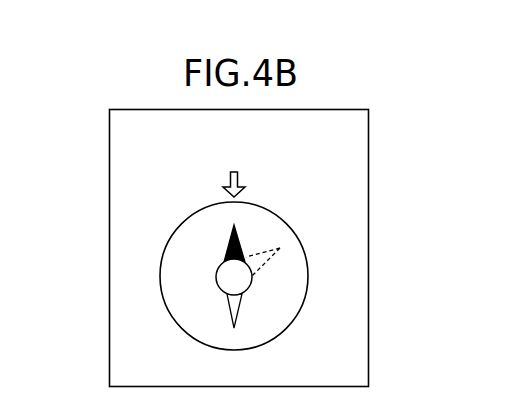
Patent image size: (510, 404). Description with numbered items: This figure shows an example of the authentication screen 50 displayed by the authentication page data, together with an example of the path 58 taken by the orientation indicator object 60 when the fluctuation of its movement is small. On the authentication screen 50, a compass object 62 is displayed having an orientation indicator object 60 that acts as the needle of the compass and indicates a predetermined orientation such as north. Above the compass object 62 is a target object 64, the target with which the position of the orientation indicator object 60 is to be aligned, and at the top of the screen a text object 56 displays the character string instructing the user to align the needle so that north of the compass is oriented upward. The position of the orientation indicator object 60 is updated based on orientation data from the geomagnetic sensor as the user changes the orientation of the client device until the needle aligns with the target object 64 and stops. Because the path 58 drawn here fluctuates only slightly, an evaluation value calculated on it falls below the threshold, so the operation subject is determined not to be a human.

The authentication screen 50 is at (369, 127).
The text object 56 is at (126, 141).
The path 58 is at (243, 240).
The orientation indicator object 60 is at (226, 243).
The compass object 62 is at (320, 276).
The target object 64 is at (240, 178).